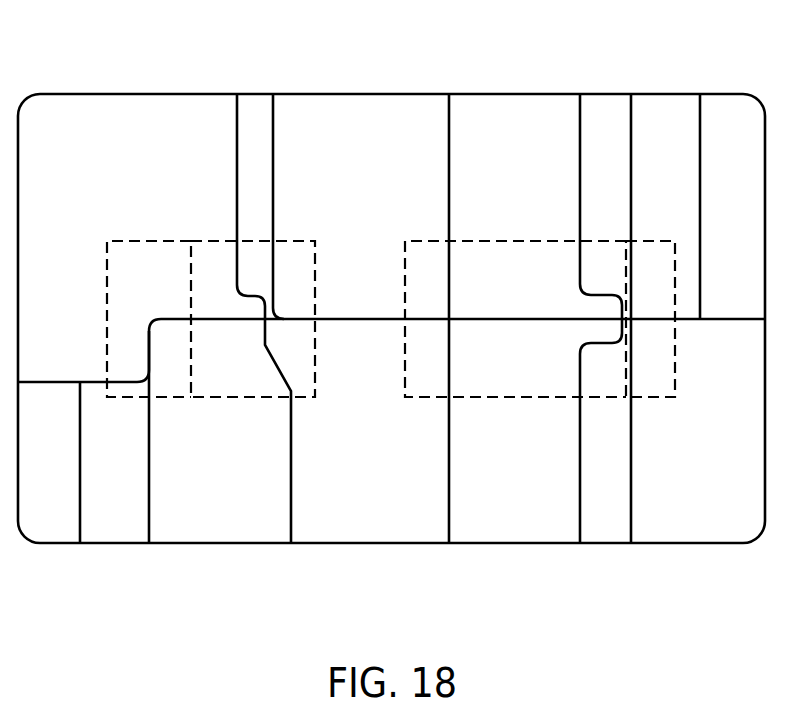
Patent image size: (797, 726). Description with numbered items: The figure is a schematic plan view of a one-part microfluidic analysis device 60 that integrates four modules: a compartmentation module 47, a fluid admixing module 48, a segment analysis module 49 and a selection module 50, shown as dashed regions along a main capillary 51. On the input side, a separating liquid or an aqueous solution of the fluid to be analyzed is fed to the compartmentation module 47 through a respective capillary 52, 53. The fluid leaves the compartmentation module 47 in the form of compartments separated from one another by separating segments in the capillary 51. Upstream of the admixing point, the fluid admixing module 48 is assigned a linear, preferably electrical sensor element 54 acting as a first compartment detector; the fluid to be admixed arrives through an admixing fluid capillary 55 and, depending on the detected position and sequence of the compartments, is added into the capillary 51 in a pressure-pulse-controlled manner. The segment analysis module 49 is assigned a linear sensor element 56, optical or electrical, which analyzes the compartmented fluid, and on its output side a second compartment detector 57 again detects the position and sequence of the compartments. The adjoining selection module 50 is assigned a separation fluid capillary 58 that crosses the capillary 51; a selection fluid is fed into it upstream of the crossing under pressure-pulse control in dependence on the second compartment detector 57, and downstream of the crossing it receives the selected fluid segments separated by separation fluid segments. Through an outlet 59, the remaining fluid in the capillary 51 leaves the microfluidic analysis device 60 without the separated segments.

The compartmentation module 47 is at (141, 258).
The fluid admixing module 48 is at (303, 258).
The segment analysis module 49 is at (504, 258).
The selection module 50 is at (667, 385).
The capillary 51 is at (357, 321).
The capillary 52 is at (79, 545).
The capillary 53 is at (149, 490).
The sensor element 54 is at (291, 490).
The admixing fluid capillary 55 is at (273, 148).
The linear sensor element 56 is at (449, 490).
The second compartment detector 57 is at (582, 148).
The separation fluid capillary 58 is at (631, 490).
The outlet 59 is at (700, 93).
The microfluidic analysis device 60 is at (170, 93).